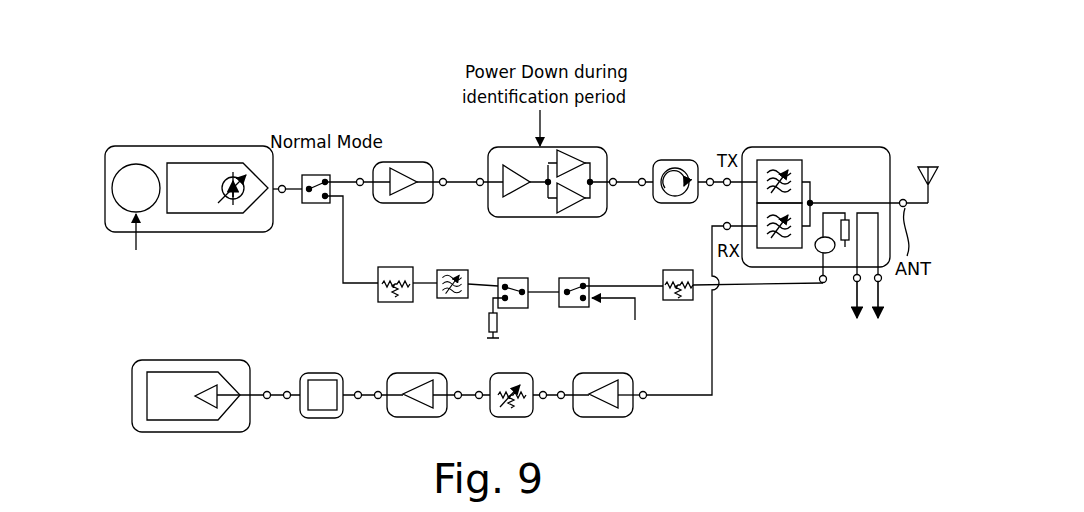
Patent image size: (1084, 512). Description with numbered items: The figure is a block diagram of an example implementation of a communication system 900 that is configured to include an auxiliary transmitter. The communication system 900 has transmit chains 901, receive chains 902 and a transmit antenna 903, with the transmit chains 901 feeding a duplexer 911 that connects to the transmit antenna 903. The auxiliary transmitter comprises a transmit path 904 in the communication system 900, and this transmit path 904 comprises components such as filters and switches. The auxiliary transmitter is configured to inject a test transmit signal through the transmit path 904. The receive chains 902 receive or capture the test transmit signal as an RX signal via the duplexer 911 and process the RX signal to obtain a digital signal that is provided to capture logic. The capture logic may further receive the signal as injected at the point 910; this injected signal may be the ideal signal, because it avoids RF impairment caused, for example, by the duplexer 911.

The communication system 900 is at (815, 84).
The transmit chains 901 is at (103, 142).
The receive chains 902 is at (117, 355).
The transmit antenna 903 is at (913, 180).
The transmit path 904 is at (343, 270).
The point 910 is at (815, 248).
The duplexer 911 is at (787, 160).